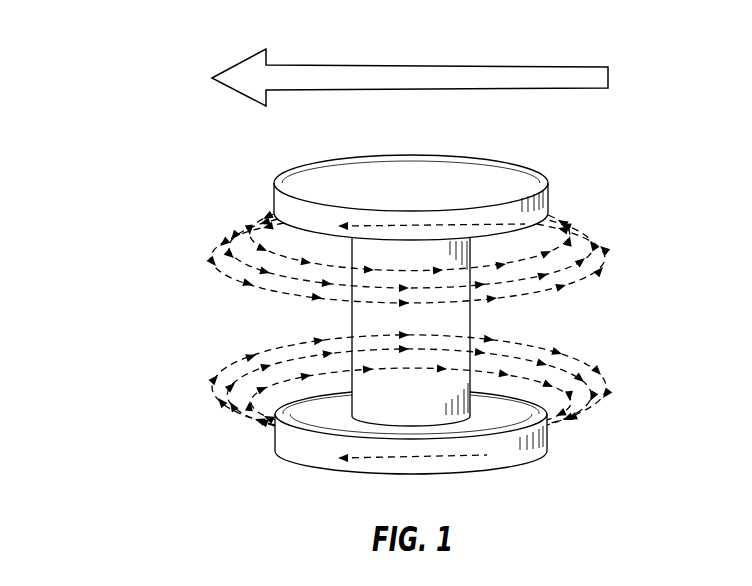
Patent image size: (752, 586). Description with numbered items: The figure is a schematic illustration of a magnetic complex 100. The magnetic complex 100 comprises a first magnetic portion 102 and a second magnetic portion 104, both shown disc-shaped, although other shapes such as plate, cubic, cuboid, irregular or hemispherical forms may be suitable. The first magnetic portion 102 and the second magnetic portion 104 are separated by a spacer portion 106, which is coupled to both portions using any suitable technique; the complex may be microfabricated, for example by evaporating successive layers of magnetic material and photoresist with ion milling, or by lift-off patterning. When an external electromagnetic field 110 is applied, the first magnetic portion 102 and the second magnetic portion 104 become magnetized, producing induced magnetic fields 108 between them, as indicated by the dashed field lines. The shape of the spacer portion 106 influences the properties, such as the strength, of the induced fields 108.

The magnetic complex 100 is at (134, 51).
The first magnetic portion 102 is at (522, 172).
The second magnetic portion 104 is at (550, 437).
The spacer portion 106 is at (352, 316).
The induced magnetic fields 108 is at (606, 240).
The external electromagnetic field 110 is at (587, 66).